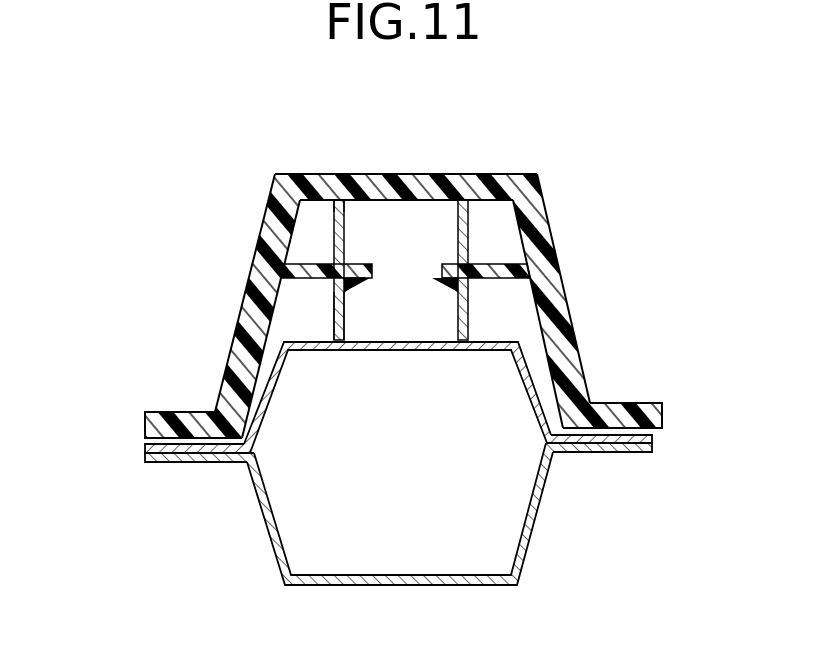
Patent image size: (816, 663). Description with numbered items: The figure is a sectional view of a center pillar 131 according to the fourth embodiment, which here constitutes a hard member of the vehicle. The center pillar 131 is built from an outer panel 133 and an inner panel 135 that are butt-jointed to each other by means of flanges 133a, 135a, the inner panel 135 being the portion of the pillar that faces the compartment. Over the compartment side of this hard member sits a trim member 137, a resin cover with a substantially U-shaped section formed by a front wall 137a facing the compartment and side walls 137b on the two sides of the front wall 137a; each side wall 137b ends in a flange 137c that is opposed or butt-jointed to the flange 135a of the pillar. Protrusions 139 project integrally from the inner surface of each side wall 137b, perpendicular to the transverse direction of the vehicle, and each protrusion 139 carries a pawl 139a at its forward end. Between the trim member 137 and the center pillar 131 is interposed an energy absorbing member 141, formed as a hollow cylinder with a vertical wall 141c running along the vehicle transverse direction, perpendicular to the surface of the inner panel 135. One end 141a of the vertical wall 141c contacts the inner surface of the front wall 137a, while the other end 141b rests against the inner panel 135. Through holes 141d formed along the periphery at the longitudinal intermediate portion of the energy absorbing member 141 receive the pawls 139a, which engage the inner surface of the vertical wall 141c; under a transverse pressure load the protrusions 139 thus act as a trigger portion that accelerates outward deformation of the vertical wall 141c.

The center pillar 131 is at (545, 530).
The outer panel 133 is at (433, 586).
The flange 133a is at (170, 462).
The inner panel 135 is at (432, 350).
The flange 135a is at (145, 448).
The trim member 137 is at (524, 167).
The front wall 137a is at (413, 173).
The side wall 137b is at (242, 289).
The flange 137c is at (170, 411).
The protrusion 139 is at (312, 263).
The pawl 139a is at (455, 288).
The energy absorbing member 141 is at (349, 208).
The end 141a is at (324, 206).
The other end 141b is at (340, 347).
The vertical wall 141c is at (332, 300).
The through hole 141d is at (445, 270).